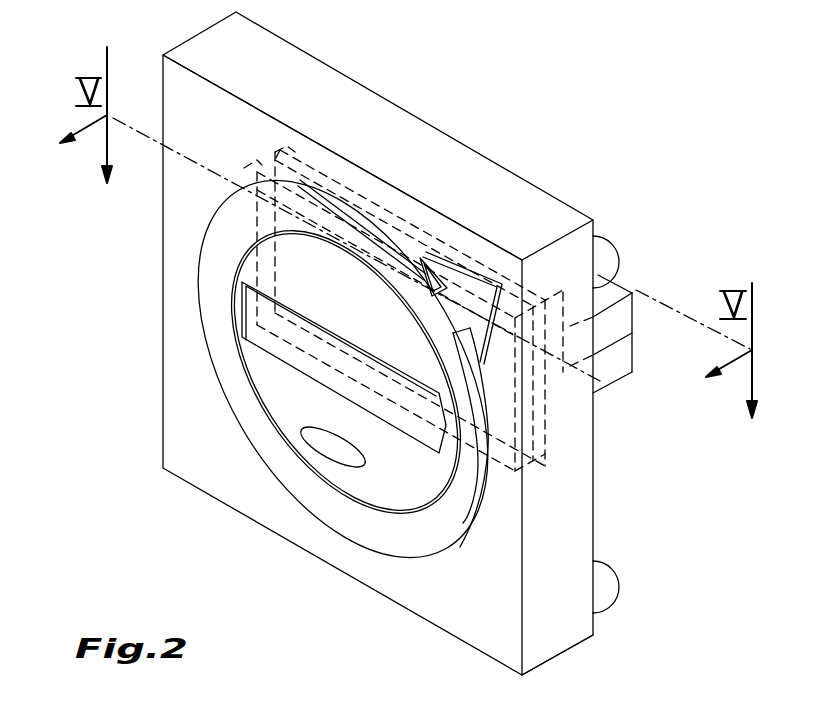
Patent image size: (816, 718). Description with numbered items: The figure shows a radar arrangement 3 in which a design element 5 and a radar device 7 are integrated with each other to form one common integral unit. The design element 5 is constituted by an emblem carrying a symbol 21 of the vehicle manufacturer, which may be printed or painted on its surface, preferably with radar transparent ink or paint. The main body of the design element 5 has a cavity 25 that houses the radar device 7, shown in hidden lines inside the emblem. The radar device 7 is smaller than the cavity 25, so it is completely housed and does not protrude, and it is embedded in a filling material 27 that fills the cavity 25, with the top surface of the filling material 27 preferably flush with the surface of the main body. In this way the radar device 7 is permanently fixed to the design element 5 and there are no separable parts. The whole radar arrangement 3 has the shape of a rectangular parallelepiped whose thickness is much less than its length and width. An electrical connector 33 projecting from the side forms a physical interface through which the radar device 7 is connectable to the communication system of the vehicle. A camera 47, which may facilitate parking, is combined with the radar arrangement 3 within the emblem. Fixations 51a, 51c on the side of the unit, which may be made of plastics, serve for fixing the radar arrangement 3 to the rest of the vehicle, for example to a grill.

The radar arrangement 3 is at (686, 83).
The design element 5 is at (631, 492).
The radar device 7 is at (394, 213).
The symbol 21 is at (198, 380).
The cavity 25 is at (315, 157).
The filling material 27 is at (263, 173).
The electrical connector 33 is at (607, 373).
The camera 47 is at (332, 443).
The fixation 51a is at (612, 262).
The fixation 51c is at (600, 583).